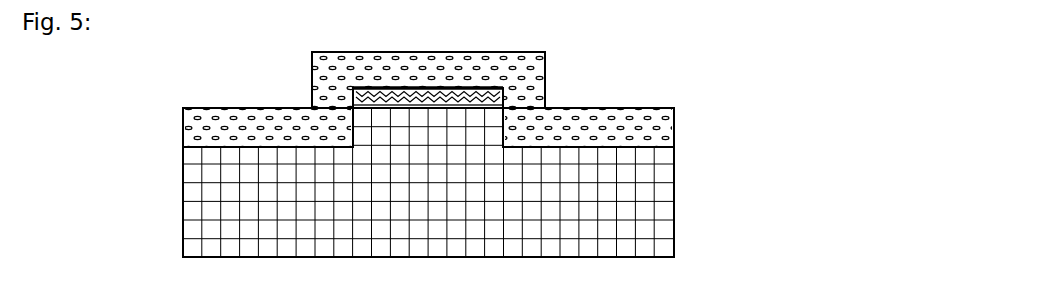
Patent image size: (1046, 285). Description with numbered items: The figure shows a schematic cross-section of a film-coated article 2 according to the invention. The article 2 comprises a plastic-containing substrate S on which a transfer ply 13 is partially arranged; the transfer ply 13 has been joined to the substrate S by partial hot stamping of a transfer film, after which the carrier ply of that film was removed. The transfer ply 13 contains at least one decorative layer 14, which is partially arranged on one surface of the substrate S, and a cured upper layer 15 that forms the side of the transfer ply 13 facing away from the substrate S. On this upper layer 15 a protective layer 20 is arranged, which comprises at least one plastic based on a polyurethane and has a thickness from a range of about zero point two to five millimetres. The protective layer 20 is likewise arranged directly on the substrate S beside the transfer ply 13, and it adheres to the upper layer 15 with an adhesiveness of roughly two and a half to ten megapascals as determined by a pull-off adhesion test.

The film-coated article 2 is at (698, 97).
The substrate S is at (642, 220).
The transfer ply 13 is at (345, 108).
The protective layer 20 is at (642, 130).
The decorative layer 14 is at (502, 100).
The upper layer 15 is at (502, 88).